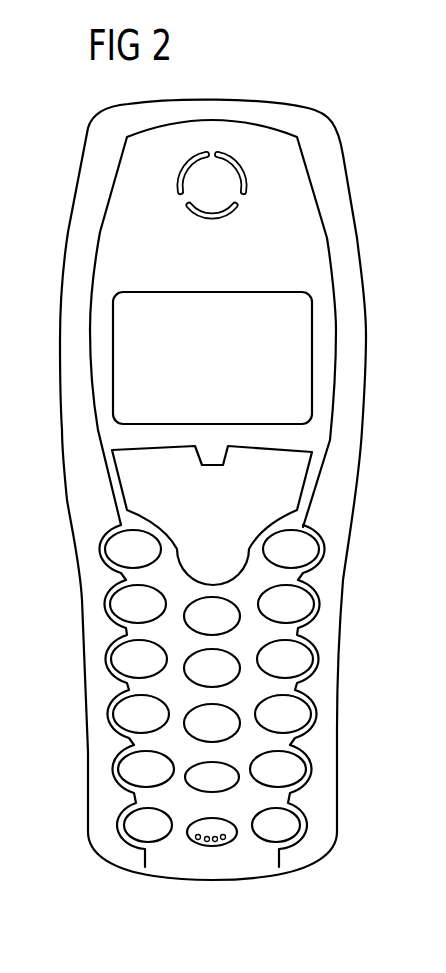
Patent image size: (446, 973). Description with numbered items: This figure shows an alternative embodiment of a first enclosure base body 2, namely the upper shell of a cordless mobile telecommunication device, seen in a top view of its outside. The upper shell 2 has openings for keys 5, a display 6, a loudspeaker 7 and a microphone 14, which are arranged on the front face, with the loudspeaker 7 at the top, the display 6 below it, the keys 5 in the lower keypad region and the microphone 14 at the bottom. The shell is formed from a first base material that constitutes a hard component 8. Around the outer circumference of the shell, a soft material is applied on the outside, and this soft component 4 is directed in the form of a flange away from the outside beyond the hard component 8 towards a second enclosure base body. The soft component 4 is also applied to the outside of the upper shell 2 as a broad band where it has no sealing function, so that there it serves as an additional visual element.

The first enclosure base body 2 is at (292, 208).
The soft component 4 is at (347, 285).
The keys 5 is at (300, 602).
The display 6 is at (130, 376).
The loudspeaker 7 is at (198, 213).
The hard component 8 is at (118, 258).
The microphone 14 is at (218, 845).